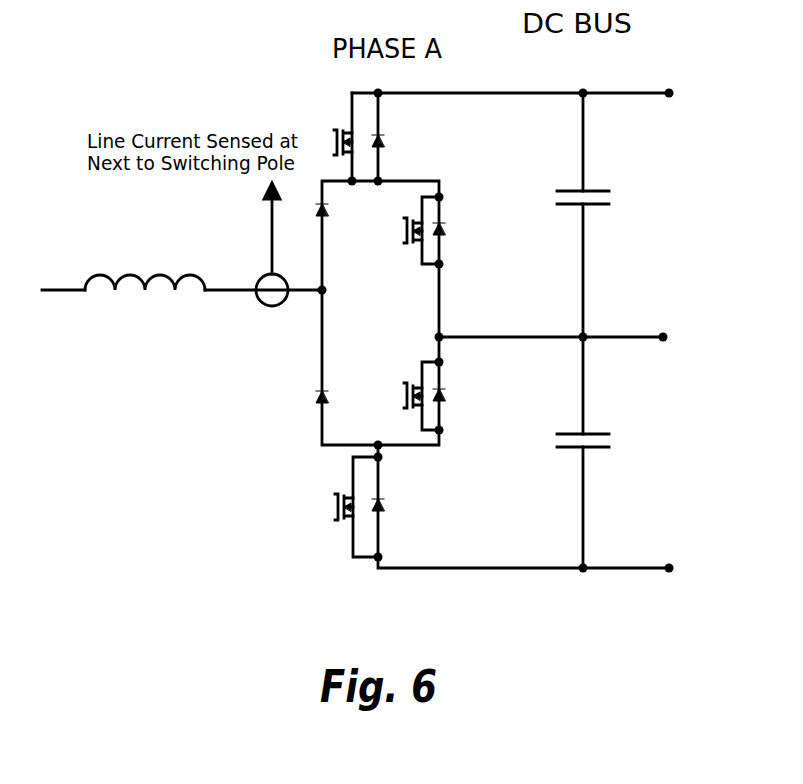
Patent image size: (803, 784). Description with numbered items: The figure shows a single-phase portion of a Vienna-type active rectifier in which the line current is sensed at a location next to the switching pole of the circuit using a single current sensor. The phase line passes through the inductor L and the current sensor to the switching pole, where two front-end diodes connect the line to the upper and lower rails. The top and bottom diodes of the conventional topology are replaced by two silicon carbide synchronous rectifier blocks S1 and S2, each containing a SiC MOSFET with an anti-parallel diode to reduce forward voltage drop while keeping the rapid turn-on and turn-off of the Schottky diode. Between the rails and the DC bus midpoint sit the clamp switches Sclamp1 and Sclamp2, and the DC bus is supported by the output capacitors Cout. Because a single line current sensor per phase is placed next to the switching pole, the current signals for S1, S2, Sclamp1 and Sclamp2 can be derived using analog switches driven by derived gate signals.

The inductor L is at (182, 262).
The SiC synchronous rectifier block S1 is at (386, 137).
The SiC synchronous rectifier block S2 is at (395, 507).
The clamp switch Sclamp1 is at (483, 230).
The clamp switch Sclamp2 is at (483, 396).
The output capacitor Cout is at (634, 313).